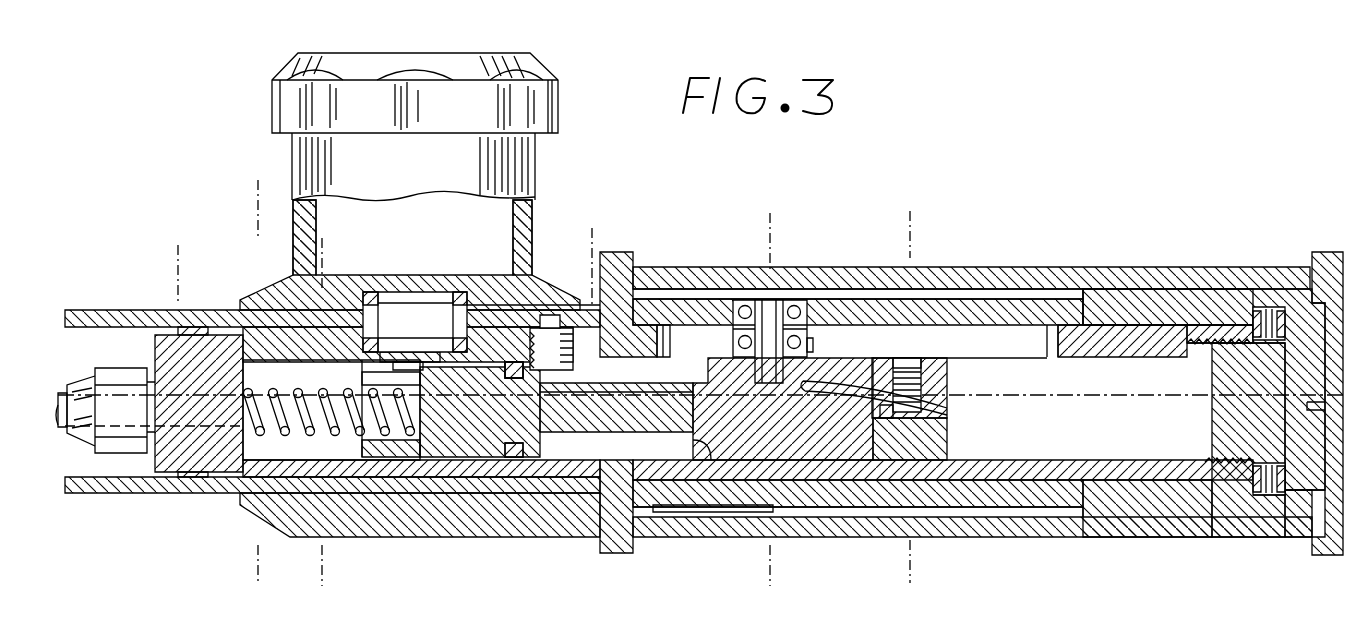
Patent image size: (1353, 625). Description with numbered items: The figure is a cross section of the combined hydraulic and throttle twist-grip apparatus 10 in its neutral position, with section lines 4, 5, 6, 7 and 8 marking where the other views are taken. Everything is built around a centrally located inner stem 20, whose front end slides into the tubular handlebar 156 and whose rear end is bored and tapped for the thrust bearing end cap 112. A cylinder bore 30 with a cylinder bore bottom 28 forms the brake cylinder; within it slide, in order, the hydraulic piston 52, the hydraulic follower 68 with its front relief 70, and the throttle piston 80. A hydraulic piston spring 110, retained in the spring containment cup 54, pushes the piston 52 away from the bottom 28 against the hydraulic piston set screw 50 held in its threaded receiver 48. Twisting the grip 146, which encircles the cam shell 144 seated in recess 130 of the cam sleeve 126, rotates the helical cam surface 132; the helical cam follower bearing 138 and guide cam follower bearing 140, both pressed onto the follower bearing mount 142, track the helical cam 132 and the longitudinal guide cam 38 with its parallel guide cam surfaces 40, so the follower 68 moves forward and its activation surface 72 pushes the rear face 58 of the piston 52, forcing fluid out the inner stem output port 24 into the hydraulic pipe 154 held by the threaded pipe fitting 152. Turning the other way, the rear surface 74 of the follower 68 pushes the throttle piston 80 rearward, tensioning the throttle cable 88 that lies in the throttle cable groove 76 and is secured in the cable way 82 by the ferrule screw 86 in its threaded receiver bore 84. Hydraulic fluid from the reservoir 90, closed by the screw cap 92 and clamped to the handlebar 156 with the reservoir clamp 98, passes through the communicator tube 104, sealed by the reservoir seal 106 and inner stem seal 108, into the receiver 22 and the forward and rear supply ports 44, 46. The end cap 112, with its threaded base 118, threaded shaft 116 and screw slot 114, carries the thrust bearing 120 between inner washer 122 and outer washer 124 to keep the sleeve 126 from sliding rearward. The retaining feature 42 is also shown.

The valve assembly 10 is at (1017, 224).
The inner stem 20 is at (642, 330).
The hydraulic fluid communication tube receiver 22 is at (347, 313).
The inner stem output port 24 is at (222, 474).
The cylinder bore bottom 28 is at (250, 448).
The cylinder bore 30 is at (1105, 459).
The longitudinal guide cam 38 is at (1046, 341).
The guide cam surfaces 40 is at (947, 337).
The retaining step 42 is at (196, 326).
The forward hydraulic fluid supply port 44 is at (388, 358).
The rear hydraulic fluid supply port 46 is at (415, 322).
The inner stem hydraulic piston set screw threaded receiver 48 is at (573, 360).
The hydraulic piston set screw 50 is at (556, 327).
The hydraulic piston 52 is at (462, 432).
The hydraulic piston spring containment cup 54 is at (390, 445).
The hydraulic piston rear face 58 is at (656, 433).
The hydraulic follower 68 is at (740, 462).
The front relief 70 is at (700, 462).
The hydraulic piston activation surface 72 is at (697, 420).
The rear surface of the follower 74 is at (870, 462).
The throttle cable groove 76 is at (783, 409).
The throttle piston 80 is at (948, 434).
The throttle piston cable way 82 is at (942, 405).
The threaded ferrule screw receiver bore 84 is at (947, 370).
The ferrule screw 86 is at (922, 388).
The throttle cable 88 is at (948, 418).
The hydraulic fluid reservoir 90 is at (533, 212).
The reservoir screw cap 92 is at (484, 53).
The reservoir clamp 98 is at (418, 538).
The hydraulic fluid communicator tube 104 is at (547, 314).
The hydraulic fluid communicator tube reservoir seal 106 is at (455, 293).
The inner stem seal 108 is at (392, 295).
The hydraulic piston spring 110 is at (340, 436).
The thrust bearing end cap 112 is at (1236, 392).
The thrust bearing end cap screw slot 114 is at (1316, 402).
The threaded shaft 116 is at (1232, 458).
The threaded base 118 is at (1216, 346).
The thrust bearing 120 is at (1266, 497).
The inner washer 122 is at (1298, 495).
The outer washer 124 is at (1256, 496).
The cam sleeve 126 is at (1175, 300).
The cam sleeve recess 130 is at (1112, 300).
The helical cam surface 132 is at (832, 300).
The helical cam follower bearing 138 is at (738, 300).
The guide cam follower bearing 140 is at (814, 340).
The follower bearing mount 142 is at (776, 300).
The cam shell 144 is at (1047, 292).
The grip 146 is at (1270, 306).
The threaded hydraulic pipe fitting 152 is at (128, 327).
The hydraulic pipe 154 is at (68, 380).
The tubular handlebar 156 is at (105, 494).
The section line 4- 4 is at (178, 306).
The section line 5- 5 is at (258, 180).
The section line 6- 6 is at (322, 238).
The section line 7- 7 is at (770, 213).
The section line 8- 8 is at (910, 211).